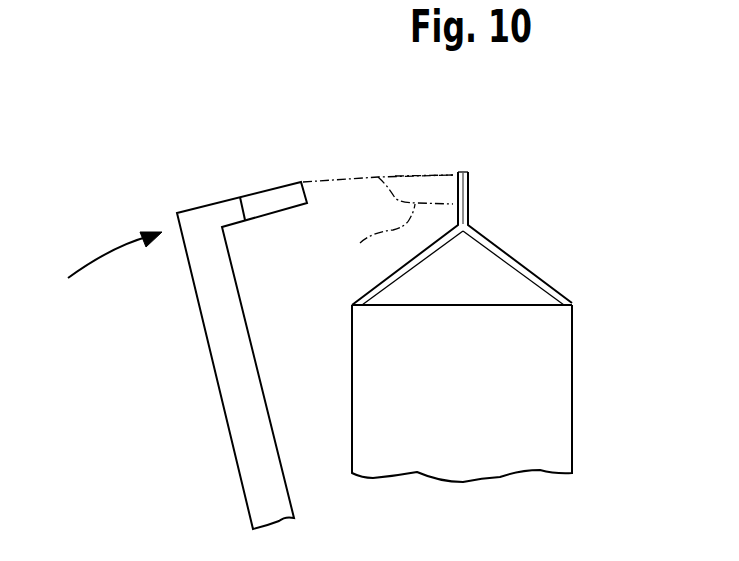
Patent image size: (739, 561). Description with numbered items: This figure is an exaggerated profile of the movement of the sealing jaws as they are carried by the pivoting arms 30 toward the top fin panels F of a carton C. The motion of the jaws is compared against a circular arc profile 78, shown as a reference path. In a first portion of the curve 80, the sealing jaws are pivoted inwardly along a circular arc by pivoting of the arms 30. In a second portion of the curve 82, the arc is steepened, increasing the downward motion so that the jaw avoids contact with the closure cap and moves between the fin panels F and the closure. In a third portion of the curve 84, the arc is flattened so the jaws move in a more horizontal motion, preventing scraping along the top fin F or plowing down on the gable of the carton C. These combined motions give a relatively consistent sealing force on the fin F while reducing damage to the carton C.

The arm 30 is at (212, 360).
The circular arc profile 78 is at (412, 174).
The first portion of the curve 80 is at (346, 178).
The second portion of the curve 82 is at (378, 180).
The third portion of the curve 84 is at (360, 243).
The fin panels F is at (480, 204).
The container C is at (572, 392).